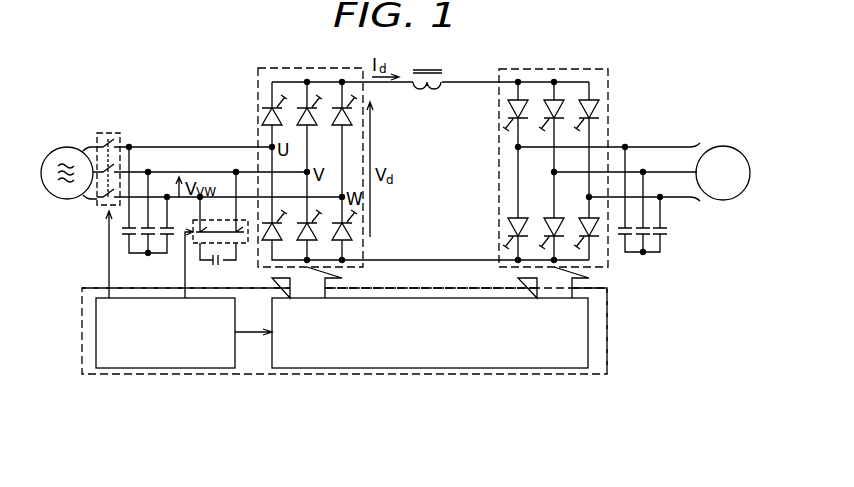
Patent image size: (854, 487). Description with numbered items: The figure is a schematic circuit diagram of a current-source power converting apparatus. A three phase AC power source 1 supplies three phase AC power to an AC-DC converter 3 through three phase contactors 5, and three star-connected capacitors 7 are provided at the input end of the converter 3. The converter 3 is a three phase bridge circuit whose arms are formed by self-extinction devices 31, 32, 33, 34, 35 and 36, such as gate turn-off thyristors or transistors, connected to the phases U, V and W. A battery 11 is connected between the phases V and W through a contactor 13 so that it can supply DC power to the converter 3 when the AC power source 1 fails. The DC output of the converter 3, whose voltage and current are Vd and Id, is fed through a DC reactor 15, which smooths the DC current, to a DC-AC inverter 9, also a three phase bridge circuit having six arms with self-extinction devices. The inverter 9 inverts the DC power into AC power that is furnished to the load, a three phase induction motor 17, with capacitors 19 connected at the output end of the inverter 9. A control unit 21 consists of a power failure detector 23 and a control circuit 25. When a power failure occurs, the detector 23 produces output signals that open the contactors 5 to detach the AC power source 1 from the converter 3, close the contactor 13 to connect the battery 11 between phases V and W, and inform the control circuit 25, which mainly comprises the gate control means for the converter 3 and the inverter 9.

The three phase AC power source 1 is at (63, 144).
The AC-DC converter 3 is at (408, 162).
The three phase contactors 5 is at (108, 133).
The capacitors 7 is at (126, 246).
The DC-AC inverter 9 is at (564, 68).
The battery 11 is at (215, 266).
The contactor 13 is at (198, 222).
The DC reactor 15 is at (435, 68).
The three phase induction motor 17 is at (720, 146).
The capacitors 19 is at (667, 232).
The control unit 21 is at (344, 312).
The power failure detector 23 is at (164, 375).
The control circuit 25 is at (528, 369).
The self-extinction device 31 is at (265, 104).
The self-extinction device 32 is at (322, 120).
The self-extinction device 33 is at (354, 118).
The self-extinction device 34 is at (264, 247).
The self-extinction device 35 is at (302, 220).
The self-extinction device 36 is at (354, 232).